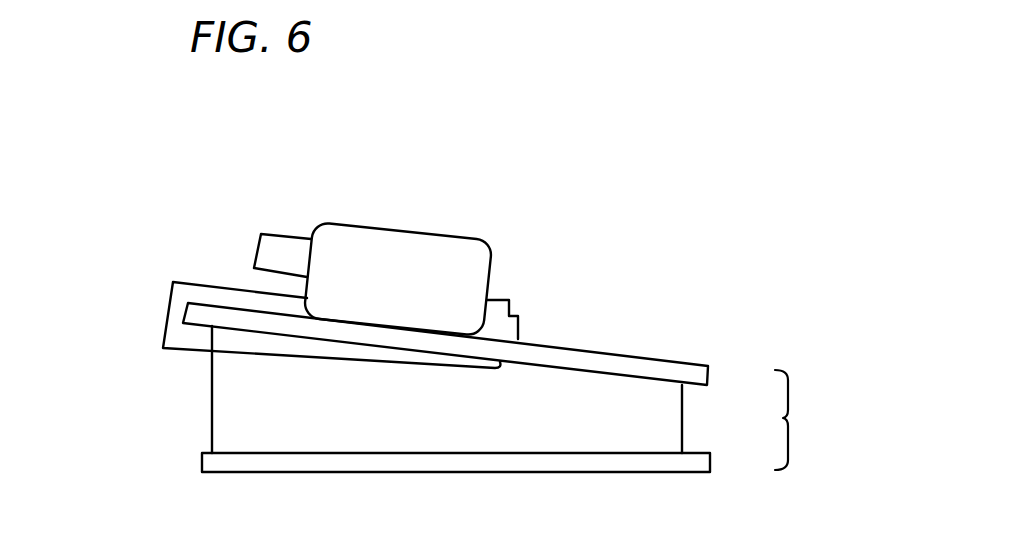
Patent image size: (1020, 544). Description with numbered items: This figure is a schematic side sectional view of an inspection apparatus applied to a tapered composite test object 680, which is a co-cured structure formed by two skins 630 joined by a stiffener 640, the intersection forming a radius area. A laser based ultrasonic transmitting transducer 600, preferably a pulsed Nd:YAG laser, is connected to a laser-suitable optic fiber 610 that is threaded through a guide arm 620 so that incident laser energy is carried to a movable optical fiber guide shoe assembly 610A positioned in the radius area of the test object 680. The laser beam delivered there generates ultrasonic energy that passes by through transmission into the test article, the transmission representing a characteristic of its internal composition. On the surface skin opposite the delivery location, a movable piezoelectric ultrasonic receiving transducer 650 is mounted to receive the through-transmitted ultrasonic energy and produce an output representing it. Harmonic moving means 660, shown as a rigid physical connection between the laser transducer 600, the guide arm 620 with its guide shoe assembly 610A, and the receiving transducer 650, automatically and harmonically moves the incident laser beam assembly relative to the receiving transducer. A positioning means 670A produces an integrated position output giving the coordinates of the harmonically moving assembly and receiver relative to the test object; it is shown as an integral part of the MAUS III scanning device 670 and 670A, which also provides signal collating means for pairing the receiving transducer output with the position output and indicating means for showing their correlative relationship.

The laser based ultrasonic transmitting transducer 600 is at (163, 348).
The laser-suitable optic fiber 610 is at (145, 358).
The optical fiber guide shoe assembly 610A is at (585, 348).
The guide arm 620 is at (203, 353).
The skins 630 is at (713, 370).
The stiffener 640 is at (682, 415).
The piezoelectric ultrasonic receiving transducer 650 is at (517, 322).
The harmonic moving means 660 is at (173, 280).
The MAUS III scanning device 670 is at (398, 222).
The positioning means 670A is at (258, 250).
The test object 680 is at (783, 418).